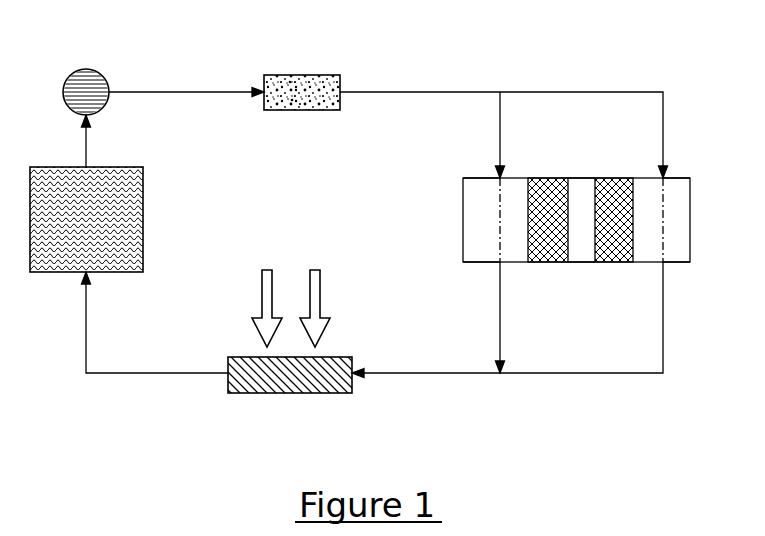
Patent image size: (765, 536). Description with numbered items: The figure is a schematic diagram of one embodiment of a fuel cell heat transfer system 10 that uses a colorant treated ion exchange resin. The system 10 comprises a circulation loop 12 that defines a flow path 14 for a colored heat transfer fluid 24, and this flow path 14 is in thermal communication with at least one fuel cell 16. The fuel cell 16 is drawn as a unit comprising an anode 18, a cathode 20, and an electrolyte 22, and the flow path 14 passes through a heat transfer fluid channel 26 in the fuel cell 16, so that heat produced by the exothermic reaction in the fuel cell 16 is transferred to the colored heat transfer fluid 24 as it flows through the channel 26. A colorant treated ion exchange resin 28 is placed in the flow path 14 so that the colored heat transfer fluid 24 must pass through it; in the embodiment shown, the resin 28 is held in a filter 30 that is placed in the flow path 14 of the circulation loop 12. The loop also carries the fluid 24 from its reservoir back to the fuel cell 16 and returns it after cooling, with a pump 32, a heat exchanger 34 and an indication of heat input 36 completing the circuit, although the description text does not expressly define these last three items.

The fuel cell heat transfer system 10 is at (128, 423).
The circulation loop 12 is at (466, 92).
The flow path 14 is at (500, 218).
The fuel cell 16 is at (543, 131).
The anode 18 is at (540, 262).
The cathode 20 is at (612, 262).
The electrolyte 22 is at (582, 197).
The colored heat transfer fluid 24 is at (63, 237).
The heat transfer fluid channel 26 is at (478, 262).
The colorant treated ion exchange resin 28 is at (293, 97).
The filter 30 is at (328, 75).
The pump 32 is at (86, 69).
The heat exchanger 34 is at (287, 393).
The heat input 36 is at (272, 279).